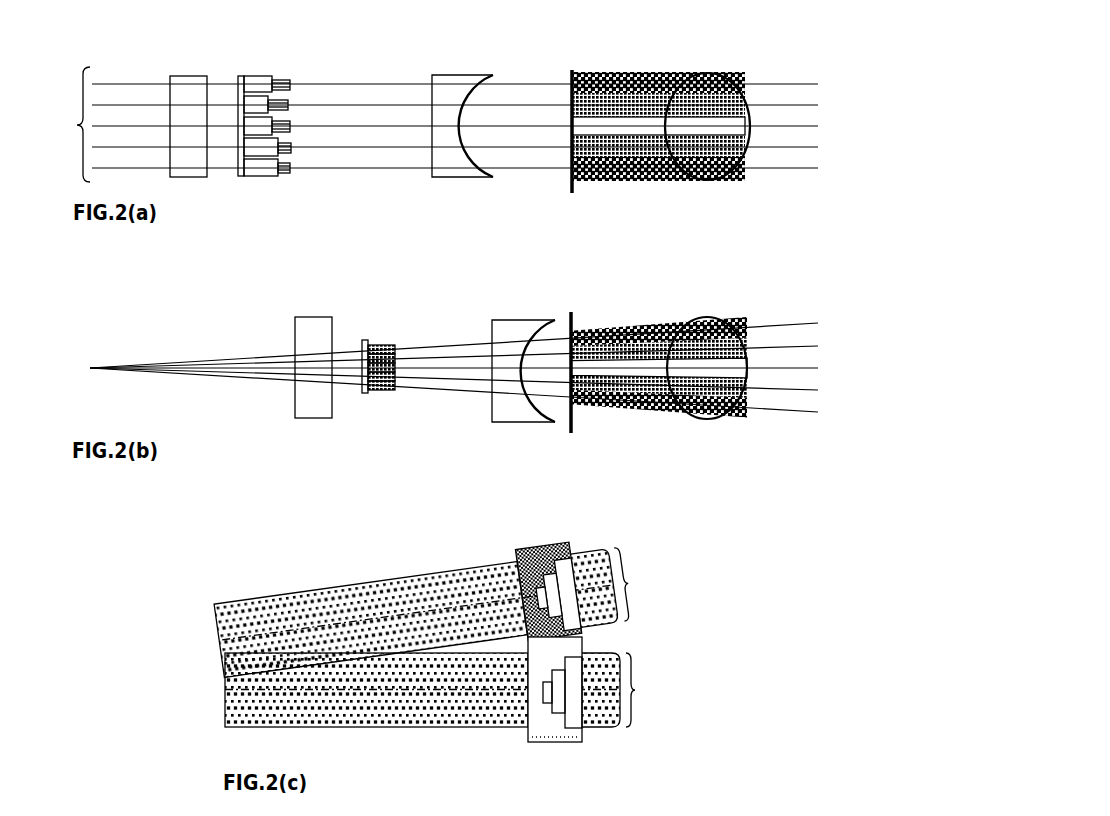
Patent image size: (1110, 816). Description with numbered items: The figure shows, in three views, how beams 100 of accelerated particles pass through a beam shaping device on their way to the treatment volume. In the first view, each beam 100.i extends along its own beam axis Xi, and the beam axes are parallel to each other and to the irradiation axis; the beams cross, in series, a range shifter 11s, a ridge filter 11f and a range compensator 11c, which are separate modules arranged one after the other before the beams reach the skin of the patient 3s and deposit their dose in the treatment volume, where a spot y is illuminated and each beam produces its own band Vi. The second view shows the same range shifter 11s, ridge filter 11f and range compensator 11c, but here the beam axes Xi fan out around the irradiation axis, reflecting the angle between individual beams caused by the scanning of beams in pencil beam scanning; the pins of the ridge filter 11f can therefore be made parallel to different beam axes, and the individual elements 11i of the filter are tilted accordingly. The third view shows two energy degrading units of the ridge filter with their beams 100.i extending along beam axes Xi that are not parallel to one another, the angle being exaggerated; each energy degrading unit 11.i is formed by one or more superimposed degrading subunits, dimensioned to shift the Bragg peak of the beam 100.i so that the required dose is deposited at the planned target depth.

In FIG. 2A, the beam 100 is at (57, 124).
In FIG. 2A, the range shifter 11s is at (170, 76).
In FIG. 2B, the range shifter 11s is at (315, 317).
In FIG. 2A, the ridge filter 11f is at (237, 64).
In FIG. 2B, the ridge filter 11f is at (361, 408).
In FIG. 2C, the ridge filter 11f is at (615, 499).
In FIG. 2A, the light emitting element i 11i is at (290, 127).
In FIG. 2B, the light emitting element i 11i is at (395, 370).
In FIG. 2A, the range compensator 11c is at (457, 75).
In FIG. 2B, the range compensator 11c is at (515, 320).
In FIG. 2A, the skin of the patient 3s is at (584, 117).
In FIG. 2B, the skin of the patient 3s is at (582, 356).
In FIG. 2A, the illuminated spot y is at (706, 73).
In FIG. 2B, the illuminated spot y is at (705, 318).
In FIG. 2A, the illumination band i Vi is at (745, 128).
In FIG. 2B, the illumination band i Vi is at (747, 368).
In FIG. 2A, the beam axis Xi is at (478, 127).
In FIG. 2B, the beam axis Xi is at (468, 367).
In FIG. 2C, the beam axis Xi is at (422, 690).
In FIG. 2C, the beam 100.i is at (658, 690).
In FIG. 2C, the energy degrading unit 11.i is at (583, 732).